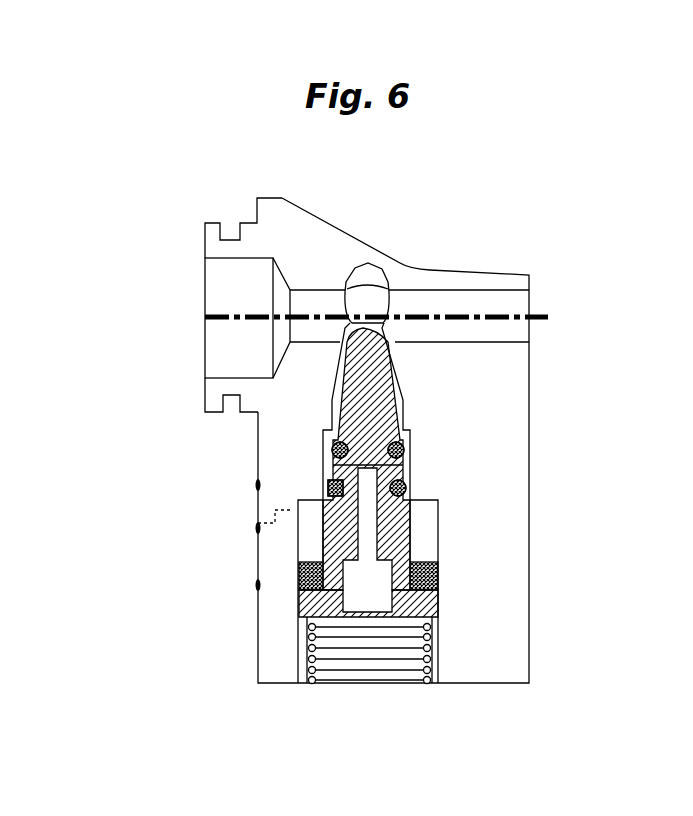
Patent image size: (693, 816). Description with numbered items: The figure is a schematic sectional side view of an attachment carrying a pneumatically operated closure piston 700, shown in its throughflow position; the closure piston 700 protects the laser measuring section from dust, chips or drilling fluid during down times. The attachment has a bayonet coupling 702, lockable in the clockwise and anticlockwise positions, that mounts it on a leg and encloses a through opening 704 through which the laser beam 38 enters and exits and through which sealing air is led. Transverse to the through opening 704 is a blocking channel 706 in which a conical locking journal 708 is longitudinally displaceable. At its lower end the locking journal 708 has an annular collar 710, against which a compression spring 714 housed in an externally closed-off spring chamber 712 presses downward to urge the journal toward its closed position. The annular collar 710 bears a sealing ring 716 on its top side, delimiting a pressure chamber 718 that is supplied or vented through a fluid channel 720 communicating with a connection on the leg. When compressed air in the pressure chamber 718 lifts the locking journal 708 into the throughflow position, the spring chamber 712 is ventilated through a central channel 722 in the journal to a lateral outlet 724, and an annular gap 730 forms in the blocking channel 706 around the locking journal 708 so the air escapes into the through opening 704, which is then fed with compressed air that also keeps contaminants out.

The closure piston 700 is at (433, 207).
The bayonet coupling 702 is at (209, 237).
The through opening 704 is at (218, 290).
The laser beam 38 is at (212, 324).
The blocking channel 706 is at (353, 270).
The locking journal 708 is at (363, 358).
The annular gap 730 is at (330, 406).
The lateral outlet 724 is at (412, 457).
The central channel 722 is at (370, 493).
The pressure chamber 718 is at (423, 523).
The fluid channel 720 is at (283, 498).
The sealing ring 716 is at (433, 568).
The annular collar 710 is at (425, 600).
The spring chamber 712 is at (440, 621).
The compression spring 714 is at (440, 645).